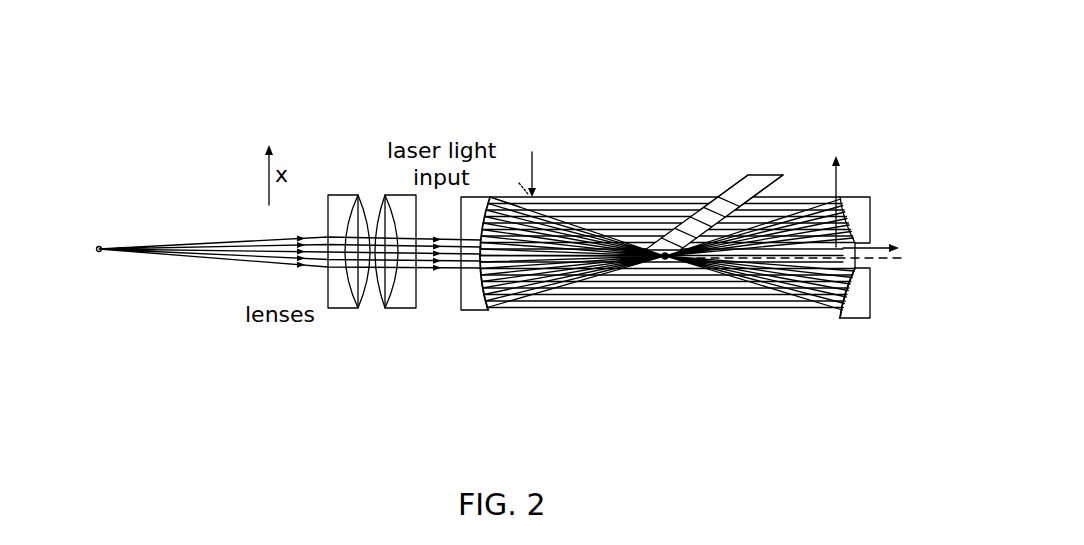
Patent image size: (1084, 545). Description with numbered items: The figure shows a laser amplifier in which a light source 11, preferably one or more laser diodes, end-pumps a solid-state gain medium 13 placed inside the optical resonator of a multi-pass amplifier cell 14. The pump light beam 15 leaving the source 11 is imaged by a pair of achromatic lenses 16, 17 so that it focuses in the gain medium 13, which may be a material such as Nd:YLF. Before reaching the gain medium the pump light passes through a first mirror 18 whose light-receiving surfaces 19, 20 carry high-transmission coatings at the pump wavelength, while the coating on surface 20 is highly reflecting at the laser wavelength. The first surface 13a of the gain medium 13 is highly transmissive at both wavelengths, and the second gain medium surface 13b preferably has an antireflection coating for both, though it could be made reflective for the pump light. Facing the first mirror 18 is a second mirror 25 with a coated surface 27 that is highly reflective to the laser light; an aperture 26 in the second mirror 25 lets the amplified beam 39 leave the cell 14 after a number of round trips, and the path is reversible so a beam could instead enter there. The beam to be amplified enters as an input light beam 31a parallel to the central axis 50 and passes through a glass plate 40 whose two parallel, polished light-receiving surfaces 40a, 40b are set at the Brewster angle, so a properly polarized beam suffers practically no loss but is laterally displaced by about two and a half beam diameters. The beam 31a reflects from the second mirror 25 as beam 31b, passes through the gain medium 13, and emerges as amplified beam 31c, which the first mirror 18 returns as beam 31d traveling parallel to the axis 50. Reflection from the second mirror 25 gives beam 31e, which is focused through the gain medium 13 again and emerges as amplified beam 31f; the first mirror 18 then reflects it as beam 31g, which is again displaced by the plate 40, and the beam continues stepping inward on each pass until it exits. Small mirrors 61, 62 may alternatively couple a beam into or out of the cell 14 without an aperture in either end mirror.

The light source 11 is at (97, 253).
The light beam 15 is at (213, 250).
The achromatic lens 16 is at (345, 310).
The achromatic lens 17 is at (400, 310).
The first mirror 18 is at (475, 311).
The light-receiving surface 19 is at (478, 293).
The light-receiving surface 20 is at (500, 303).
The amplifier cell 14 is at (660, 95).
The input light beam 31a is at (499, 198).
The reflected beam 31b is at (800, 198).
The amplified beam 31c is at (555, 308).
The reflected and redirected beam 31d is at (598, 310).
The reflected and redirected beam 31e is at (788, 300).
The amplified light beam 31f is at (600, 196).
The reflected beam 31g is at (653, 197).
The small mirror 61 is at (535, 198).
The glass plate 40 is at (758, 182).
The light-receiving surface 40a is at (742, 180).
The light-receiving surface 40b is at (783, 181).
The gain medium 13 is at (677, 293).
The first surface 13a is at (640, 293).
The second gain medium surface 13b is at (700, 293).
The second mirror 25 is at (858, 315).
The aperture 26 is at (873, 275).
The coated surface 27 is at (830, 308).
The small mirror 62 is at (866, 263).
The input light beam 39 is at (877, 247).
The central axis 50 is at (819, 255).